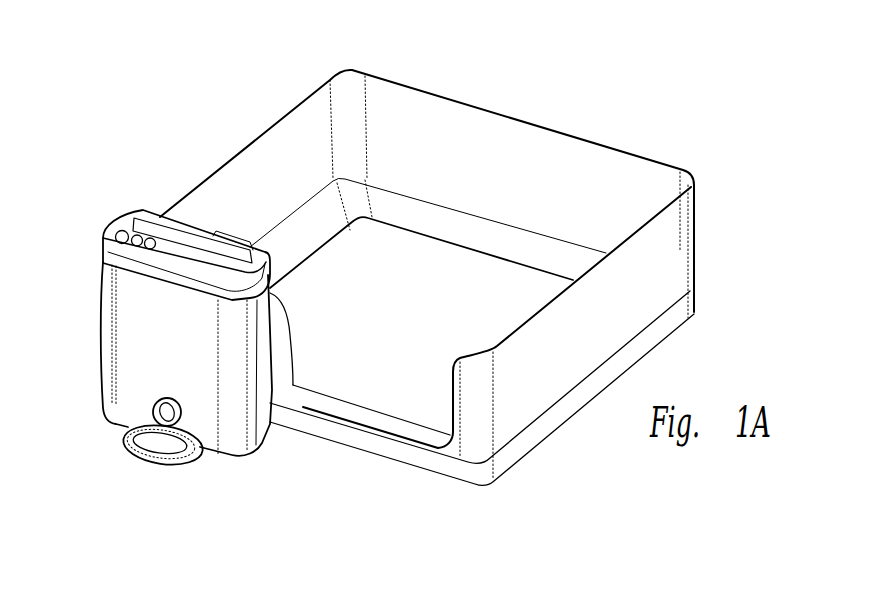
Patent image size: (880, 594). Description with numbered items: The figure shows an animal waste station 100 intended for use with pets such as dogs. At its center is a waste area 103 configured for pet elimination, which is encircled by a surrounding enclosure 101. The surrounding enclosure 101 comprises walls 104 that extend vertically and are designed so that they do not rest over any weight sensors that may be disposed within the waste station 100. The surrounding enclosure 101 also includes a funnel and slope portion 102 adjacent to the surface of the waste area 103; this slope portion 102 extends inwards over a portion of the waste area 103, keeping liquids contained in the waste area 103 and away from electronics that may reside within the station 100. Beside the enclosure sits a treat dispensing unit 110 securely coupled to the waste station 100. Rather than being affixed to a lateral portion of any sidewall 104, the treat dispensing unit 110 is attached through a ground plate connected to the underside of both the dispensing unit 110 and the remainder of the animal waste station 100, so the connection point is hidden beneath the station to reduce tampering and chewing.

The animal waste station 100 is at (146, 74).
The surrounding enclosure 101 is at (383, 72).
The slope portion 102 is at (430, 213).
The waste area 103 is at (518, 293).
The walls 104 is at (512, 163).
The treat dispensing unit 110 is at (100, 258).